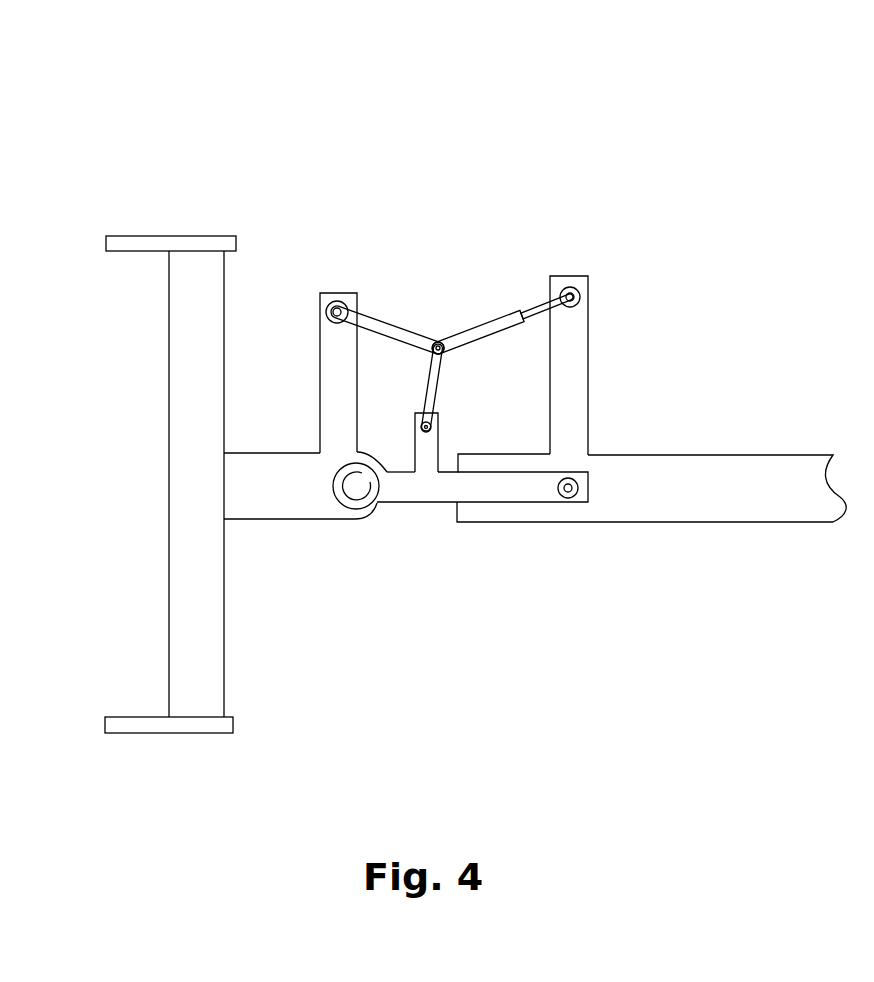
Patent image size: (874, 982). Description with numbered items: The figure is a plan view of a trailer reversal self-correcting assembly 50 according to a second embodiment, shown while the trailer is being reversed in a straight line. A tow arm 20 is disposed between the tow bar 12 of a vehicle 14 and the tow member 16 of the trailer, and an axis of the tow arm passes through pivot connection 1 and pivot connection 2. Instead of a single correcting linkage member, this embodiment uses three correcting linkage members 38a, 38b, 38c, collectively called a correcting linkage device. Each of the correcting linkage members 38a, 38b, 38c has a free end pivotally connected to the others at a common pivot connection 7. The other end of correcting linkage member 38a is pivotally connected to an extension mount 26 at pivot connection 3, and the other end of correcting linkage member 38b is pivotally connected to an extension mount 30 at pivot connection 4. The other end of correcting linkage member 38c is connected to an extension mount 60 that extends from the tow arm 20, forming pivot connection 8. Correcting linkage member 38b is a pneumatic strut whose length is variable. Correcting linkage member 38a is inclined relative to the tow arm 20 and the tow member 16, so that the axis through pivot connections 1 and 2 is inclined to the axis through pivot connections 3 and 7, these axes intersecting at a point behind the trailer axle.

The trailer reversal self-correcting assembly 50 is at (428, 143).
The vehicle 14 is at (202, 703).
The tow bar 12 is at (274, 502).
The extension mount 26 is at (333, 367).
The pivot connection 1 is at (356, 485).
The tow arm 20 is at (455, 490).
The extension mount 60 is at (431, 463).
The tow member 16 is at (710, 507).
The extension mount 30 is at (568, 353).
The correcting linkage member 38a is at (382, 330).
The correcting linkage member 38b is at (489, 326).
The correcting linkage member 38c is at (437, 375).
The pivot connection 3 is at (324, 292).
The pivot connection 4 is at (576, 281).
The pivot connection 7 is at (436, 340).
The pivot connection 8 is at (415, 427).
The pivot connection 2 is at (570, 490).